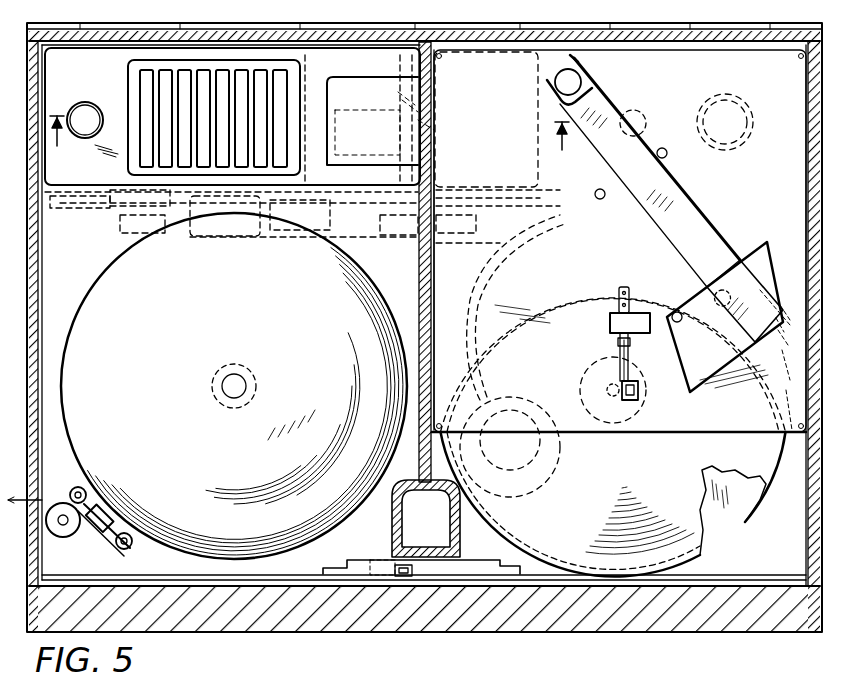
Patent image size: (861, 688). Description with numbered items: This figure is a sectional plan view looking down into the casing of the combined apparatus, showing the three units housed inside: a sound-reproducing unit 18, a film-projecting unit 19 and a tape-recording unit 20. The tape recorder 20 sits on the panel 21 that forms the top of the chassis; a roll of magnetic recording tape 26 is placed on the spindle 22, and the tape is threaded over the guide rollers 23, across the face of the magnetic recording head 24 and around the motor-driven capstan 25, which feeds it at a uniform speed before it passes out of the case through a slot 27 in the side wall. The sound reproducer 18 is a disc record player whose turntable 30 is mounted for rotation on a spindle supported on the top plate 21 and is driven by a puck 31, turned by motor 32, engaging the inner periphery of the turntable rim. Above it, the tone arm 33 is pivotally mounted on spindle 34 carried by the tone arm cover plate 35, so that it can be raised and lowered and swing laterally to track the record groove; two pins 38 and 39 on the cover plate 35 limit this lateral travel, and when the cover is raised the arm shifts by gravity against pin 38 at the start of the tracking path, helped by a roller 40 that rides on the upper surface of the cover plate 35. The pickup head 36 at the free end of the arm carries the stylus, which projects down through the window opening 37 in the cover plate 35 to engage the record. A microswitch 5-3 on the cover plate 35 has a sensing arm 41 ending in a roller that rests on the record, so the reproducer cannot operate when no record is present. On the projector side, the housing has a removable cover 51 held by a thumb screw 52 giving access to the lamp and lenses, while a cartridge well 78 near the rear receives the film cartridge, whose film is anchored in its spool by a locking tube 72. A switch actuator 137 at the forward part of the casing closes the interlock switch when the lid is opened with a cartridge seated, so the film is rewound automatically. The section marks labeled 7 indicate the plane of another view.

The locking clip or tube 72 is at (424, 355).
The tone arm cover plate 35 is at (776, 70).
The removable cover 51 is at (108, 66).
The thumb screw 52 is at (82, 108).
The section line indicator 7 is at (310, 146).
The cartridge well 78 is at (368, 67).
The film-projecting unit 19 is at (331, 68).
The tape-recording unit 20 is at (205, 562).
The roll of magnetic recording tape 26 is at (258, 535).
The spindle 22 is at (228, 393).
The capstan 25 is at (62, 532).
The slot 27 is at (42, 498).
The magnetic recording head 24 is at (108, 520).
The guide rollers 23 is at (134, 540).
The panel 21 is at (353, 537).
The switch actuator 137 is at (404, 578).
The sound-reproducing unit 18 is at (660, 473).
The turntable 30 is at (731, 505).
The motor 32 is at (548, 482).
The puck 31 is at (505, 398).
The microswitch 5-3 is at (620, 308).
The sensing arm 41 is at (638, 392).
The tone arm 33 is at (698, 208).
The spindle 34 is at (567, 70).
The pin 38 is at (664, 150).
The pin 39 is at (596, 196).
The pickup head 36 is at (750, 320).
The roller 40 is at (742, 255).
The window opening 37 is at (677, 312).